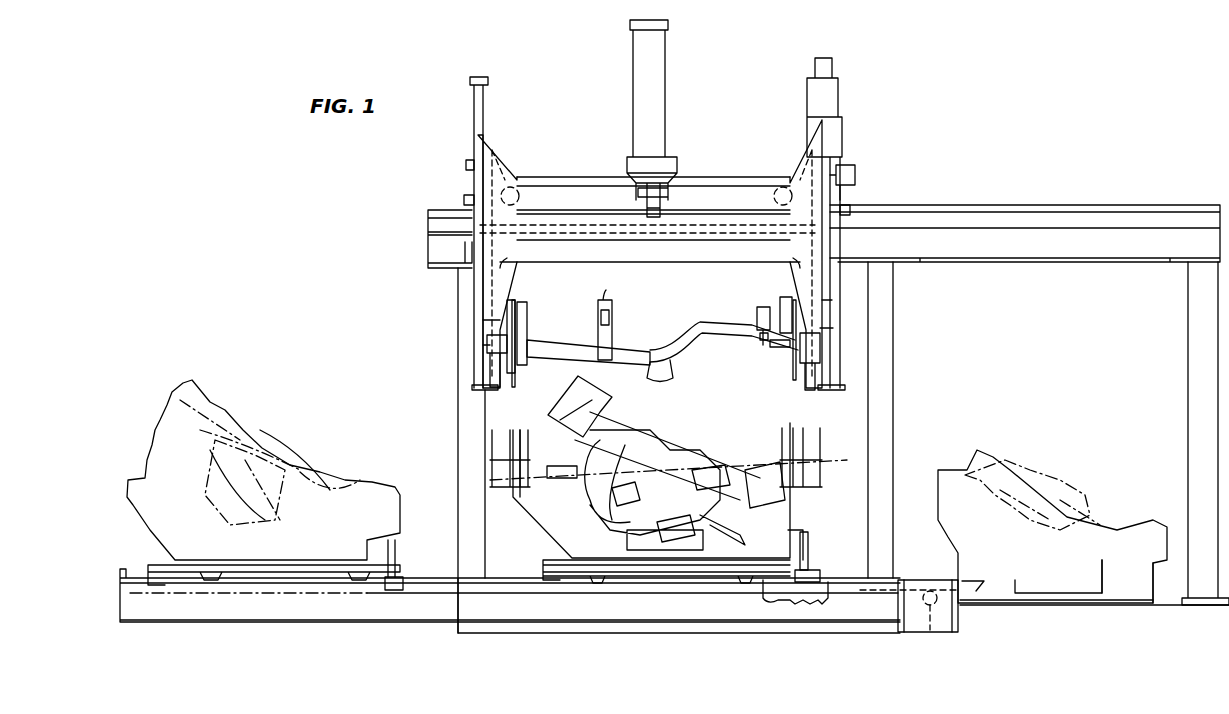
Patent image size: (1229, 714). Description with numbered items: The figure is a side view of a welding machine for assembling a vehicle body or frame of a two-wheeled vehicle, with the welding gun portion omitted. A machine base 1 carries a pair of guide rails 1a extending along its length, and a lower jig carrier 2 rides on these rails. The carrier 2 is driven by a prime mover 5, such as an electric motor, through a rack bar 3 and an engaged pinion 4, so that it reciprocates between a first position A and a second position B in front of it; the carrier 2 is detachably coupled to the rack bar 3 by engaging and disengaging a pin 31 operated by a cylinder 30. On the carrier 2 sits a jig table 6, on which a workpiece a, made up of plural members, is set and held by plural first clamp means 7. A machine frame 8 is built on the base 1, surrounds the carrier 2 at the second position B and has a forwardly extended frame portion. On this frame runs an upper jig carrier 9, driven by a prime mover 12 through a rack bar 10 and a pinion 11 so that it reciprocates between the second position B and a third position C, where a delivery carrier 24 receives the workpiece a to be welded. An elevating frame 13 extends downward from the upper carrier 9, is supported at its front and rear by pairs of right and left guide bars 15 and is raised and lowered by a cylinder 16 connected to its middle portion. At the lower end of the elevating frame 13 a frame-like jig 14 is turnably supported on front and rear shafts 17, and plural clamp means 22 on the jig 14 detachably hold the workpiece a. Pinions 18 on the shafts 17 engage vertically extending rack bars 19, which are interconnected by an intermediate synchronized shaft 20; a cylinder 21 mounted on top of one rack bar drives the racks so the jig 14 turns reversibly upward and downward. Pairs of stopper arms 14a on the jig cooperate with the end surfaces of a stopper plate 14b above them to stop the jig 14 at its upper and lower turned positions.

The machine base 1 is at (639, 603).
The guide rails 1a is at (430, 577).
The lower jig carrier 2 is at (718, 563).
The rack bar 3 is at (775, 587).
The pinion 4 is at (932, 608).
The prime mover 5 is at (957, 620).
The jig table 6 is at (553, 523).
The first clamp means 7 is at (597, 400).
The machine frame 8 is at (458, 417).
The upper jig carrier 9 is at (568, 200).
The rack bar 10 is at (602, 175).
The pinion 11 is at (848, 170).
The prime mover 12 is at (808, 88).
The elevating frame 13 is at (717, 218).
The jig 14 is at (572, 347).
The stopper arms 14a is at (518, 373).
The stopper plate 14b is at (512, 300).
The guide bars 15 is at (473, 198).
The cylinder 16 is at (658, 60).
The shafts 17 is at (485, 340).
The pinions 18 is at (487, 353).
The rack bars 19 is at (483, 320).
The intermediate synchronized shaft 20 is at (677, 228).
The cylinder 21 is at (481, 108).
The clamp means 22 is at (606, 300).
The delivery carrier 24 is at (1127, 580).
The cylinder 30 is at (790, 545).
The pin 31 is at (803, 573).
The first position A is at (272, 357).
The second position B is at (712, 405).
The third position C is at (1042, 402).
The workpiece a is at (647, 442).